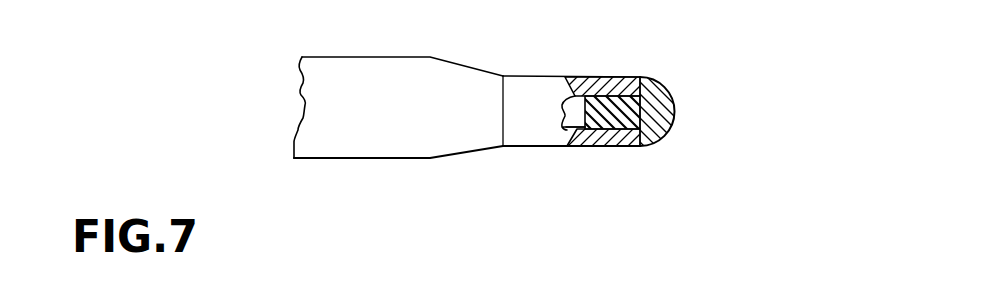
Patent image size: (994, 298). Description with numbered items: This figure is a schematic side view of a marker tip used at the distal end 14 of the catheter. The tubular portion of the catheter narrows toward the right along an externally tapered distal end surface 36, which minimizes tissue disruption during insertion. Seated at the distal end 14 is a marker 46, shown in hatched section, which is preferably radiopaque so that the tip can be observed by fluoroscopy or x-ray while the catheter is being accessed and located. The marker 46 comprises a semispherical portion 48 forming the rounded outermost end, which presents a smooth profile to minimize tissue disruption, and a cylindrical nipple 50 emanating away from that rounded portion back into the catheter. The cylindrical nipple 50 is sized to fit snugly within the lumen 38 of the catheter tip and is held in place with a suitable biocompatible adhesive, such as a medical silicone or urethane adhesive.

The distal end 14 is at (668, 168).
The externally tapered distal end surface 36 is at (463, 67).
The lumen 38 is at (578, 114).
The marker 46 is at (704, 109).
The semispherical portion 48 is at (653, 98).
The cylindrical nipple 50 is at (606, 95).